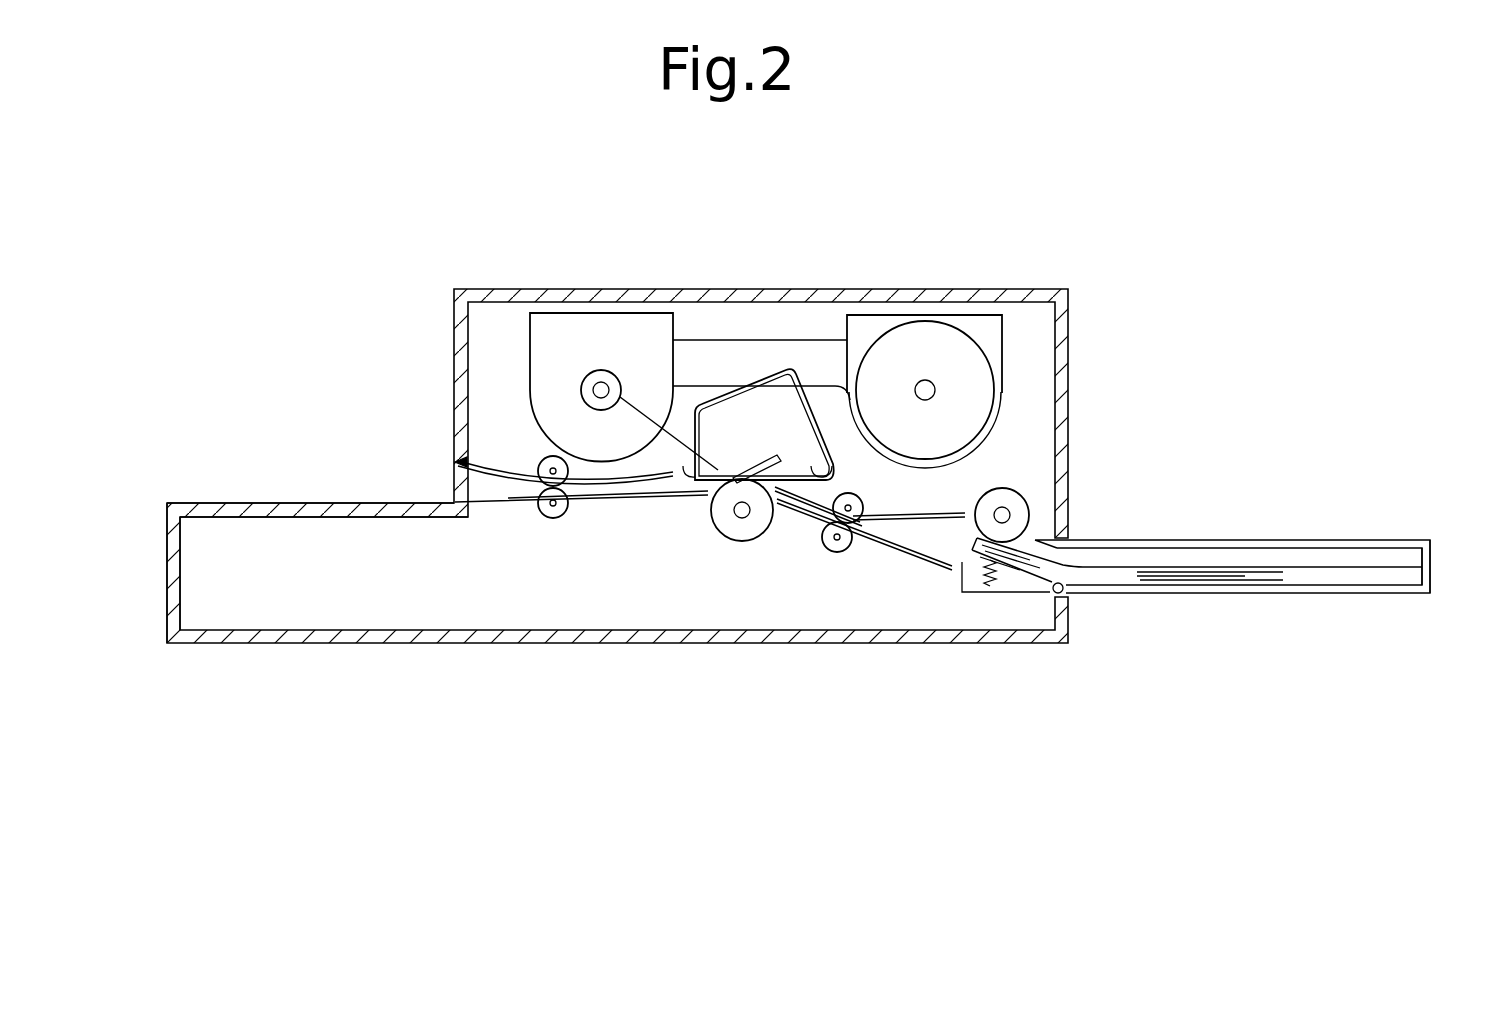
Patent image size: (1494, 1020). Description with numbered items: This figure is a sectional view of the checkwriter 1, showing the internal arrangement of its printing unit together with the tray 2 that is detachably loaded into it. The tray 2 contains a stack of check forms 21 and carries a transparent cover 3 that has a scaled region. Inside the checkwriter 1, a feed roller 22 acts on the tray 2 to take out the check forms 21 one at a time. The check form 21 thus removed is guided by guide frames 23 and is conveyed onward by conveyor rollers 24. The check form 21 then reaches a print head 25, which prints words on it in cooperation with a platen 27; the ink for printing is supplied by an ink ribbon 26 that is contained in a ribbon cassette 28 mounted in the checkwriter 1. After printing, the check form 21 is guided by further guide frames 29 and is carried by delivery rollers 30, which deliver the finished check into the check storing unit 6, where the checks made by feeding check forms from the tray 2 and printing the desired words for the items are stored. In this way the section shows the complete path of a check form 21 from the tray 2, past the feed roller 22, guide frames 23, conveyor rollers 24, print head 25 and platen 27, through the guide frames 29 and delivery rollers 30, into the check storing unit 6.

The checkwriter 1 is at (1003, 217).
The tray 2 is at (1433, 559).
The transparent cover 3 is at (1292, 540).
The check storing unit 6 is at (297, 506).
The check forms 21 is at (1308, 577).
The feed roller 22 is at (1018, 505).
The guide frames 23 is at (936, 521).
The conveyor rollers 24 is at (862, 523).
The print head 25 is at (752, 462).
The ink ribbon 26 is at (847, 423).
The platen 27 is at (738, 541).
The ribbon cassette 28 is at (623, 337).
The guide frames 29 is at (632, 494).
The delivery rollers 30 is at (551, 512).